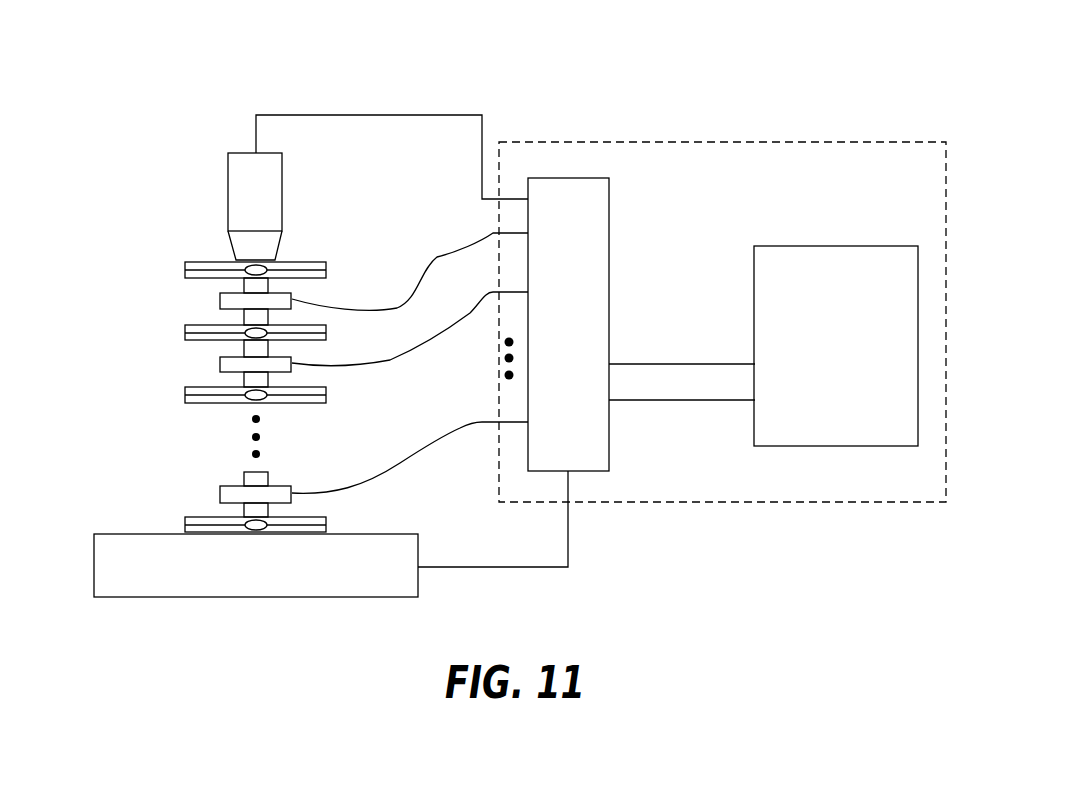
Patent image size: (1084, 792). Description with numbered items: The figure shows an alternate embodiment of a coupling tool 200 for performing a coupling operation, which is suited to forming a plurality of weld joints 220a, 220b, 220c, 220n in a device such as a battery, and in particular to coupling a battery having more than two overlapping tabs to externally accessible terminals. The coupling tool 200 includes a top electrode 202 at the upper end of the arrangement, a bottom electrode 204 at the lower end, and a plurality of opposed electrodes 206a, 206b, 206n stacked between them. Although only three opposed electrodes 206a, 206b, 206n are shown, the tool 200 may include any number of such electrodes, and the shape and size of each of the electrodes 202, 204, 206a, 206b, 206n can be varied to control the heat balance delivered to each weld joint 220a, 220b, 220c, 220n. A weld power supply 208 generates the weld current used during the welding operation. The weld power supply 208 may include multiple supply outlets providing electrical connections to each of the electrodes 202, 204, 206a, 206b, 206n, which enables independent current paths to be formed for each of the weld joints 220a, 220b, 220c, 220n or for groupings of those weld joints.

The coupling tool 200 is at (379, 30).
The top electrode 202 is at (208, 200).
The bottom electrode 204 is at (70, 542).
The opposed electrode 206a is at (203, 300).
The opposed electrode 206b is at (203, 363).
The opposed electrode 206n is at (199, 490).
The weld power supply 208 is at (696, 142).
The weld joint 220a is at (326, 268).
The weld joint 220b is at (326, 333).
The weld joint 220c is at (326, 395).
The weld joint 220n is at (326, 524).